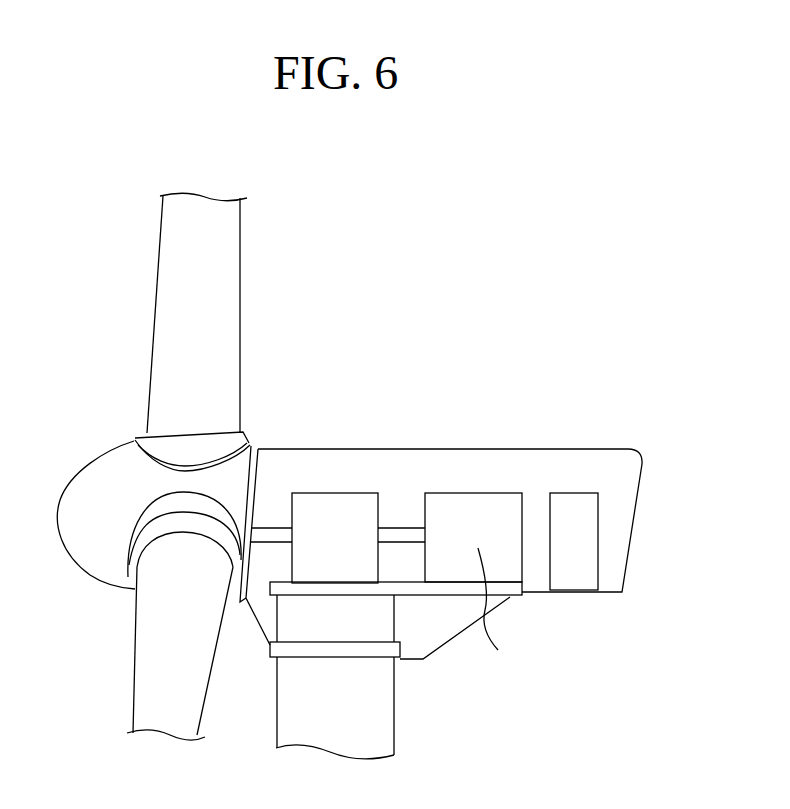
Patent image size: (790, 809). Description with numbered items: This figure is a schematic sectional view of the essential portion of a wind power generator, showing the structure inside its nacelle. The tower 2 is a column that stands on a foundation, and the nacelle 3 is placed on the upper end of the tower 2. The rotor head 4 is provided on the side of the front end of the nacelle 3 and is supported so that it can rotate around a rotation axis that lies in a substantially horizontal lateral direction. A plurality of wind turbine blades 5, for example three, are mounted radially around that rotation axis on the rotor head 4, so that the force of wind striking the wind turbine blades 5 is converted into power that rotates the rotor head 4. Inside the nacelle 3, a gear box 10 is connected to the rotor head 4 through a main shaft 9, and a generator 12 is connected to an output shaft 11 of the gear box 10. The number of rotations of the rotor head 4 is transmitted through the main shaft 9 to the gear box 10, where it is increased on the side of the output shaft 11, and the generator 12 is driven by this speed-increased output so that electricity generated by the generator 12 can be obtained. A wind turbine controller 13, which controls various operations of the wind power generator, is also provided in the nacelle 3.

The tower 2 is at (395, 716).
The nacelle 3 is at (636, 440).
The rotor head 4 is at (93, 480).
The wind turbine blade 5 is at (225, 252).
The main shaft 9 is at (273, 527).
The gear box 10 is at (338, 493).
The output shaft 11 is at (405, 527).
The generator 12 is at (472, 493).
The wind turbine controller 13 is at (598, 535).